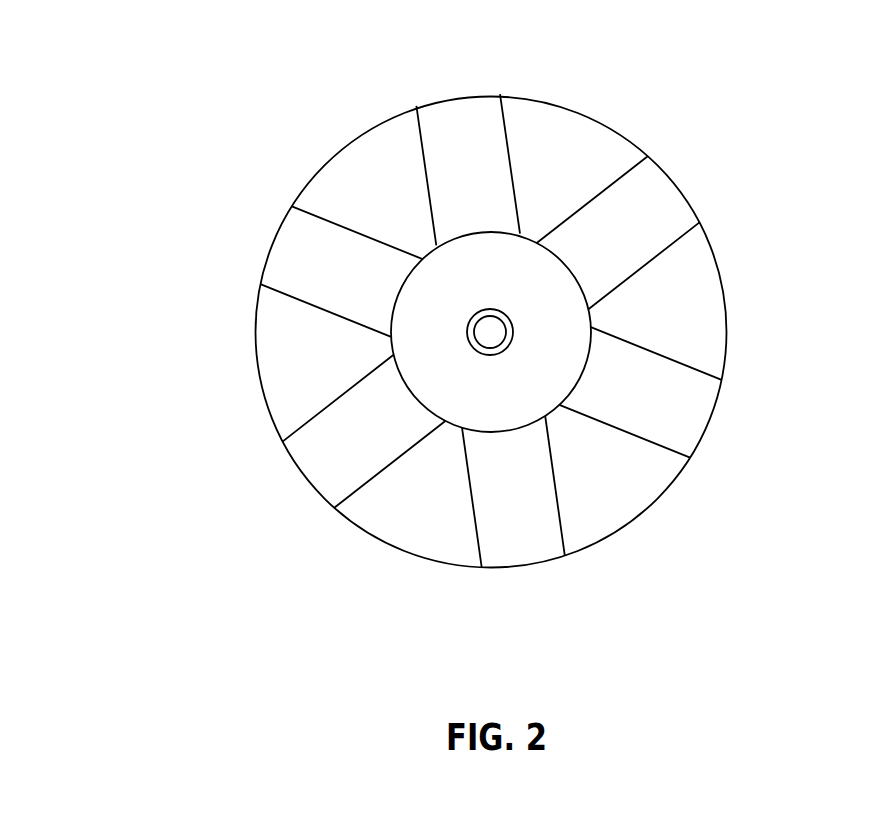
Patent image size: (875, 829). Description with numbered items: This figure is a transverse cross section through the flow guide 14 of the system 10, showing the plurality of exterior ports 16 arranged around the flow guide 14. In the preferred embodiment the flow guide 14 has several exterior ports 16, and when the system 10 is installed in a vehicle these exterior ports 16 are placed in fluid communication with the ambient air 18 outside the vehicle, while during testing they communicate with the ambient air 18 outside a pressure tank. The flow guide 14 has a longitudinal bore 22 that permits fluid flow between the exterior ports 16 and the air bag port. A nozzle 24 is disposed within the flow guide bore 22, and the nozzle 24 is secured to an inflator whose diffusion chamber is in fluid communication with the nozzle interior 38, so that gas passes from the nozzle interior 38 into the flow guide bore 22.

The system 10 is at (203, 104).
The flow guide 14 is at (298, 368).
The exterior port 16 is at (460, 140).
The ambient air 18 is at (869, 430).
The longitudinal bore 22 is at (497, 283).
The nozzle 24 is at (512, 320).
The nozzle interior 38 is at (490, 332).